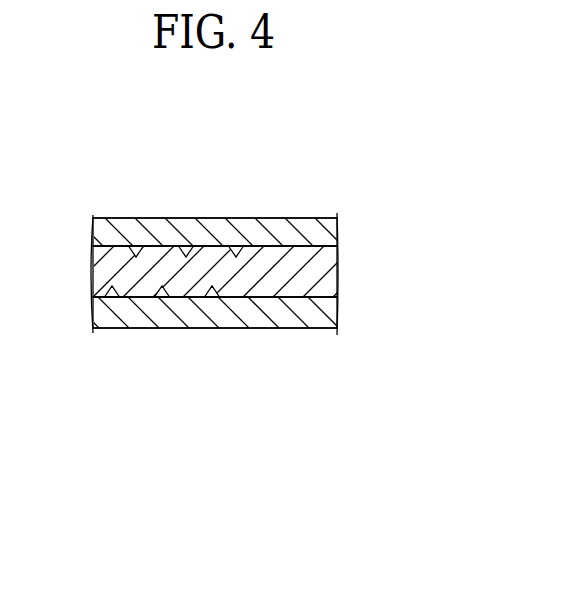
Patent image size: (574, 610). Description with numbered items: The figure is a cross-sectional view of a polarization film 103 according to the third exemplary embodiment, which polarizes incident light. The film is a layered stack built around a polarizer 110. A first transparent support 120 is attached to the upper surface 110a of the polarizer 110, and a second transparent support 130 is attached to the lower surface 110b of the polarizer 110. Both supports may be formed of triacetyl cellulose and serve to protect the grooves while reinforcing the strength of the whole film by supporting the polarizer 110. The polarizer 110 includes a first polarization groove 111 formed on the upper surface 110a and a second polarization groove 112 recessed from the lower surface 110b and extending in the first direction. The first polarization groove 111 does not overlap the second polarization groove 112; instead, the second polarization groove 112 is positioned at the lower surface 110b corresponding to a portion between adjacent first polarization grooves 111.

The polarization film 103 is at (273, 147).
The polarizer 110 is at (312, 271).
The upper surface 110a is at (322, 247).
The lower surface 110b is at (315, 293).
The first polarization groove 111 is at (237, 250).
The second polarization groove 112 is at (211, 299).
The first transparent support 120 is at (330, 226).
The second transparent support 130 is at (330, 323).